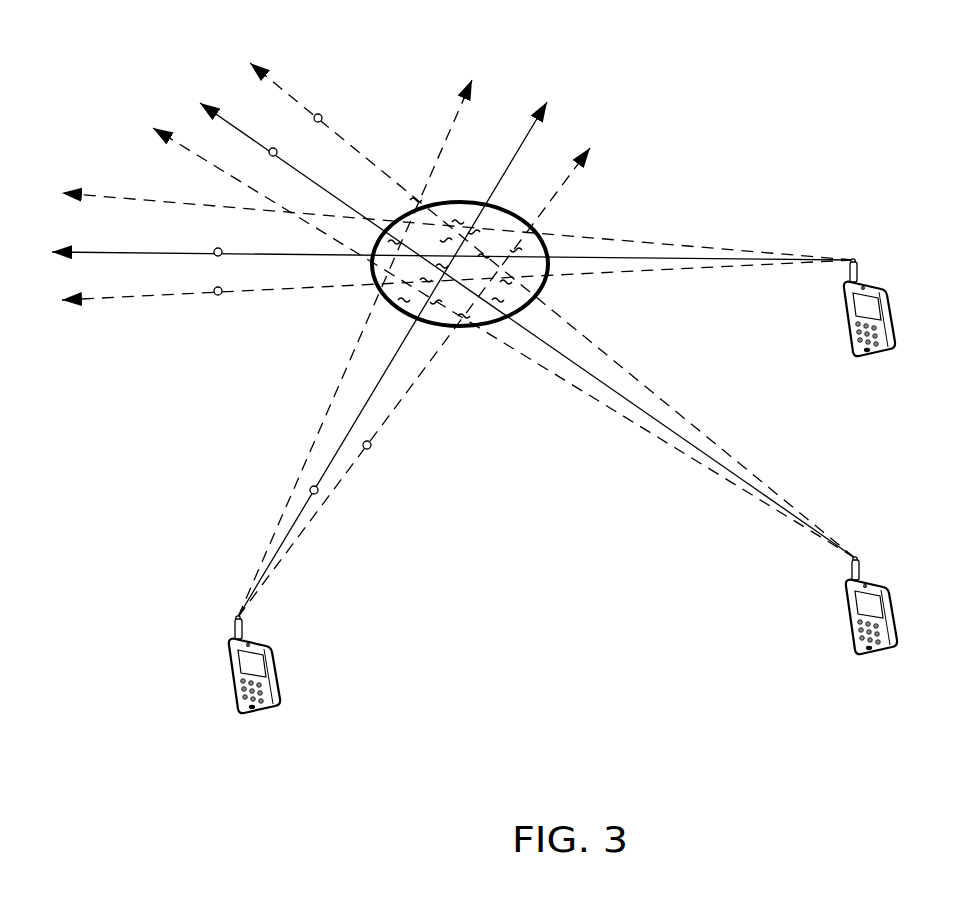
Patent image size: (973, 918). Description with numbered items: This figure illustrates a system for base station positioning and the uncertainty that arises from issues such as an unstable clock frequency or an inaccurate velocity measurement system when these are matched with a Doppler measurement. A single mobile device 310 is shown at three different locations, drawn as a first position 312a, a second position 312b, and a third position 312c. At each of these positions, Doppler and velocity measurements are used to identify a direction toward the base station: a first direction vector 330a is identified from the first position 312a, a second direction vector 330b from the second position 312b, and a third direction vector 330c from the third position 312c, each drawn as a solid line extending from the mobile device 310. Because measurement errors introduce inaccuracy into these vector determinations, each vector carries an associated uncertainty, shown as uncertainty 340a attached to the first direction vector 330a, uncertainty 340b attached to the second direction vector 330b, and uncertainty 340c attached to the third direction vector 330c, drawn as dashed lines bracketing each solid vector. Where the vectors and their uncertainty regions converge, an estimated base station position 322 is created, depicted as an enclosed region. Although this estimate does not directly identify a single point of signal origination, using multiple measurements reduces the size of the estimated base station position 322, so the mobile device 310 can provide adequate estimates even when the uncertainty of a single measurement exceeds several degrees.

The mobile device 310 is at (567, 526).
The first position 312a is at (249, 705).
The second position 312b is at (886, 647).
The third position 312c is at (880, 348).
The estimated base station position 322 is at (447, 197).
The first direction vector 330a is at (366, 407).
The second direction vector 330b is at (610, 400).
The third direction vector 330c is at (655, 255).
The uncertainty 340a is at (325, 500).
The uncertainty 340b is at (237, 178).
The uncertainty 340c is at (220, 207).